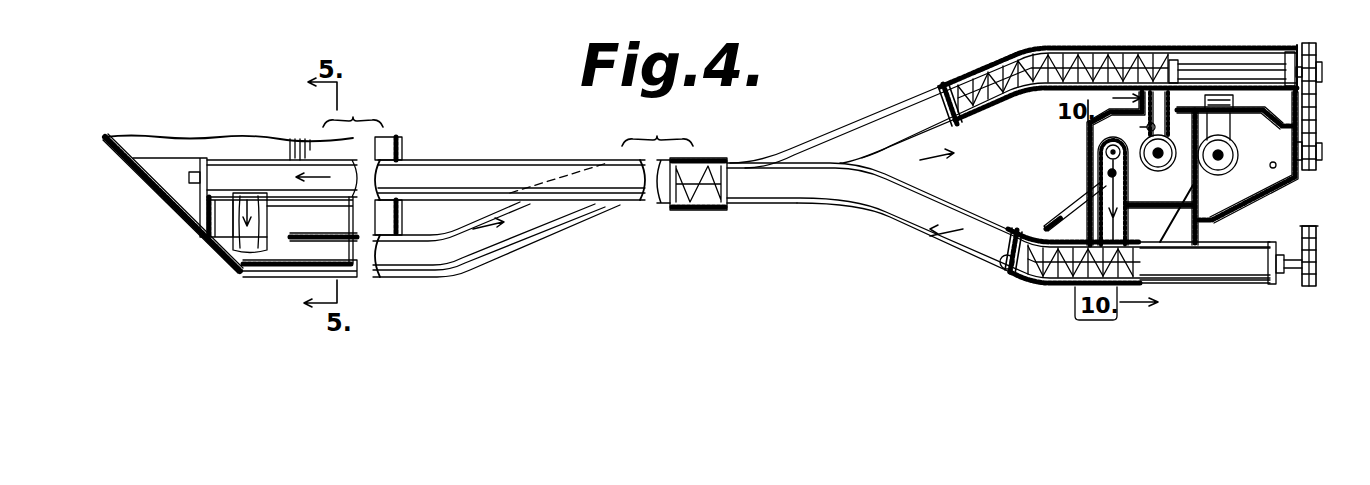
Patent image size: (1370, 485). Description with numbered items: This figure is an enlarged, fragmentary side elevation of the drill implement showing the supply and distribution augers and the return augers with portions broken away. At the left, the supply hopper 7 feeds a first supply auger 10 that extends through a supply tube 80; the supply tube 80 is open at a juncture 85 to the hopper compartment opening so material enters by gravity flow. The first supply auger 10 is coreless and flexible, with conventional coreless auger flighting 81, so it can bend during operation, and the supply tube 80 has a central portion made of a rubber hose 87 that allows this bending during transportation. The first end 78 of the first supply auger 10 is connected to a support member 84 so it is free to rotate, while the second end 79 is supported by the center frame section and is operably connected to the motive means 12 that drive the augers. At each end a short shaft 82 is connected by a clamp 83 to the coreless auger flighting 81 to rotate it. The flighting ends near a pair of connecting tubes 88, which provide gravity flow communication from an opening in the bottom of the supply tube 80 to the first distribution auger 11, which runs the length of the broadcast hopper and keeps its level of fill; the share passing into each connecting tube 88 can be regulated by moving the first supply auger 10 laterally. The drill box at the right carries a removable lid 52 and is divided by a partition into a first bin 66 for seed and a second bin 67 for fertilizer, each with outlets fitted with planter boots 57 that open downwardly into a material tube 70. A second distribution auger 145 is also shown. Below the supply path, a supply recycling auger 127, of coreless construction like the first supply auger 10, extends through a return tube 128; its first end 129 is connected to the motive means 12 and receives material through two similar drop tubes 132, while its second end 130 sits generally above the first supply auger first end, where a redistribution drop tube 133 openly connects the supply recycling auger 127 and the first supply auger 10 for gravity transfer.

The supply hopper 7 is at (163, 141).
The support member 84 is at (143, 178).
The second end 130 is at (221, 160).
The redistribution drop tube 133 is at (223, 221).
The juncture 85 is at (336, 248).
The first end 78 is at (278, 268).
The first supply auger 10 is at (487, 247).
The rubber hose 87 is at (705, 160).
The supply tube 80 is at (958, 86).
The coreless auger flighting 81 is at (990, 104).
The clamp 83 is at (1170, 60).
The short shaft 82 is at (1250, 63).
The second end 79 is at (1278, 60).
The motive means 12 is at (1331, 81).
The removable lid 52 is at (1288, 108).
The second distribution auger 145 is at (1238, 160).
The first distribution auger 11 is at (1160, 161).
The second bin 67 is at (1246, 198).
The connecting tubes 88 is at (1140, 127).
The first bin 66 is at (1089, 138).
The drop tubes 132 is at (1100, 175).
The boot 57 is at (1076, 216).
The return tube 128 is at (1003, 272).
The supply recycling auger 127 is at (1050, 282).
The first end 129 is at (1250, 278).
The material tube 70 is at (1118, 306).